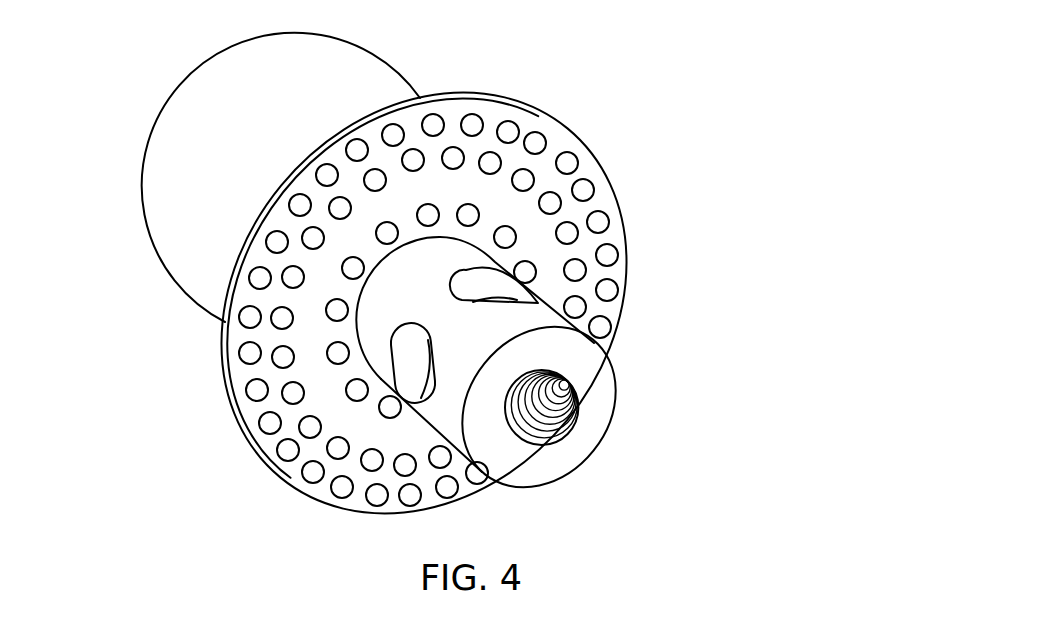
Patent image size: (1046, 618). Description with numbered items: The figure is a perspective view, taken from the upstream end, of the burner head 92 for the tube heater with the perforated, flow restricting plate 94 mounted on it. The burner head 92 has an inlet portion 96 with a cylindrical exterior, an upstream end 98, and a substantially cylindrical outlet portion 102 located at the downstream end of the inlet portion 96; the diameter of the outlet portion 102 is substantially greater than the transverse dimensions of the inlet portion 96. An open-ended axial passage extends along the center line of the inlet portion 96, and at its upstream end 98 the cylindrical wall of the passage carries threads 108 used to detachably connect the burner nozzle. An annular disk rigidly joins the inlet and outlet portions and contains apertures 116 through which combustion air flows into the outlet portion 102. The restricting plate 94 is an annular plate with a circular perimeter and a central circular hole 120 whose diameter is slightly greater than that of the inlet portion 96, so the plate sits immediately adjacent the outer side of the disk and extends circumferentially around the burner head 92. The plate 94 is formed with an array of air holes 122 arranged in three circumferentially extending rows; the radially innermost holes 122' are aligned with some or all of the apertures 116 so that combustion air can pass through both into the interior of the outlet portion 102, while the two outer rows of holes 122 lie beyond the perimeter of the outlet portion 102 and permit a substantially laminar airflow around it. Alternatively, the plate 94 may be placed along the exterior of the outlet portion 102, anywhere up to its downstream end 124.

The burner head 92 is at (632, 157).
The perforated flow restricting plate 94 is at (295, 483).
The inlet portion 96 is at (597, 436).
The upstream end 98 is at (563, 474).
The outlet portion 102 is at (370, 92).
The threads 108 is at (522, 414).
The apertures 116 is at (467, 213).
The central circular hole 120 is at (372, 286).
The air holes 122 is at (672, 206).
The radially innermost holes 122' is at (248, 387).
The downstream end of the outlet portion 124 is at (180, 255).